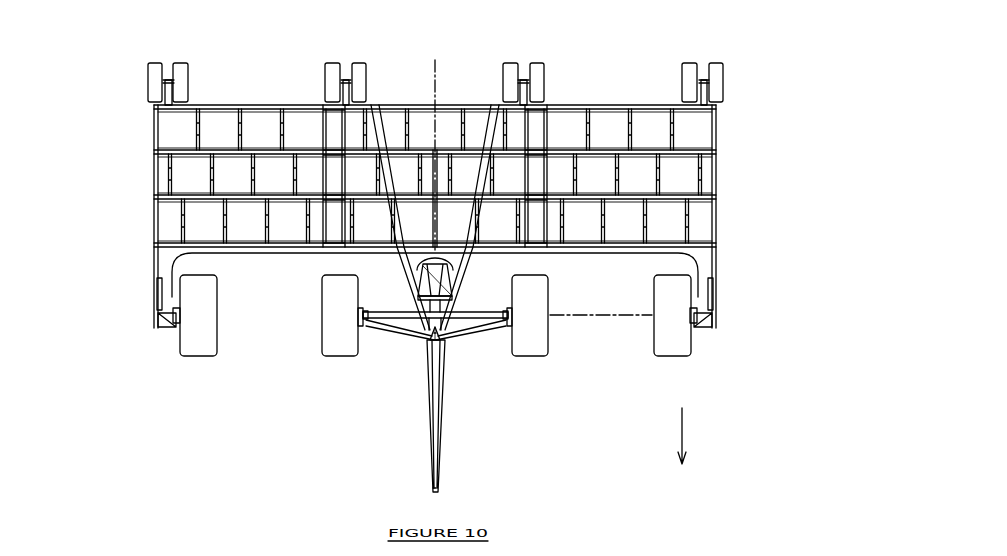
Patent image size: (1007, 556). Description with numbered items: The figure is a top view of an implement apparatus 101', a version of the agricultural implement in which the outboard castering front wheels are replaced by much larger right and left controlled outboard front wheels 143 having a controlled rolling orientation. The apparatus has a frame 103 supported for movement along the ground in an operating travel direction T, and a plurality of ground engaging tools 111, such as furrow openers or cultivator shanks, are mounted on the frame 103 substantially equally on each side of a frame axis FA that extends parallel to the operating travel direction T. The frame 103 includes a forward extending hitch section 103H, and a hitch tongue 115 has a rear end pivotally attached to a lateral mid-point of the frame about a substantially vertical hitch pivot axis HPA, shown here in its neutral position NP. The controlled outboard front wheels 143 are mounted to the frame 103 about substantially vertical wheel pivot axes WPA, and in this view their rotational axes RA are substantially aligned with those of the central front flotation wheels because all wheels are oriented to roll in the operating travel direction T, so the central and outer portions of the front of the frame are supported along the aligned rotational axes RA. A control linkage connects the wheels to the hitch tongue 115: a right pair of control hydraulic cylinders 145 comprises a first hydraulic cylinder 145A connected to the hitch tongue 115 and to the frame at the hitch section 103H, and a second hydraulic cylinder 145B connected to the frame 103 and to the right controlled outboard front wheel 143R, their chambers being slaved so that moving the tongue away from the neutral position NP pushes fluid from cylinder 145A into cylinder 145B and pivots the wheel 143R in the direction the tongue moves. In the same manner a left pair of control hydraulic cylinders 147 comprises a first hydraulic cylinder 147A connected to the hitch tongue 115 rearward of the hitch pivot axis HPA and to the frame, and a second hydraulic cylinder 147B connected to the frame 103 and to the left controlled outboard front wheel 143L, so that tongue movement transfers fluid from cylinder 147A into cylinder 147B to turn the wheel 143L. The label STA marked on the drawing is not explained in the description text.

The implement apparatus 101' is at (416, 252).
The frame 103 is at (563, 106).
The hitch section 103H is at (430, 265).
The ground engaging tools 111 is at (200, 118).
The hitch tongue 115 is at (441, 433).
The controlled outboard front wheels 143 is at (448, 350).
The right controlled outboard front wheel 143R is at (178, 348).
The left controlled outboard front wheel 143L is at (692, 347).
The right pair of control hydraulic cylinders 145 is at (309, 335).
The first hydraulic cylinder 145A is at (451, 280).
The second hydraulic cylinder 145B is at (158, 302).
The left pair of control hydraulic cylinders 147 is at (551, 327).
The first hydraulic cylinder 147A is at (422, 280).
The second hydraulic cylinder 147B is at (712, 302).
The frame axis FA is at (436, 78).
The rotational axes RA is at (603, 316).
The wheel pivot axes WPA is at (157, 319).
The hitch pivot axis HPA is at (427, 340).
The steering axis STA is at (445, 340).
The neutral position NP is at (433, 440).
The operating travel direction T is at (683, 428).